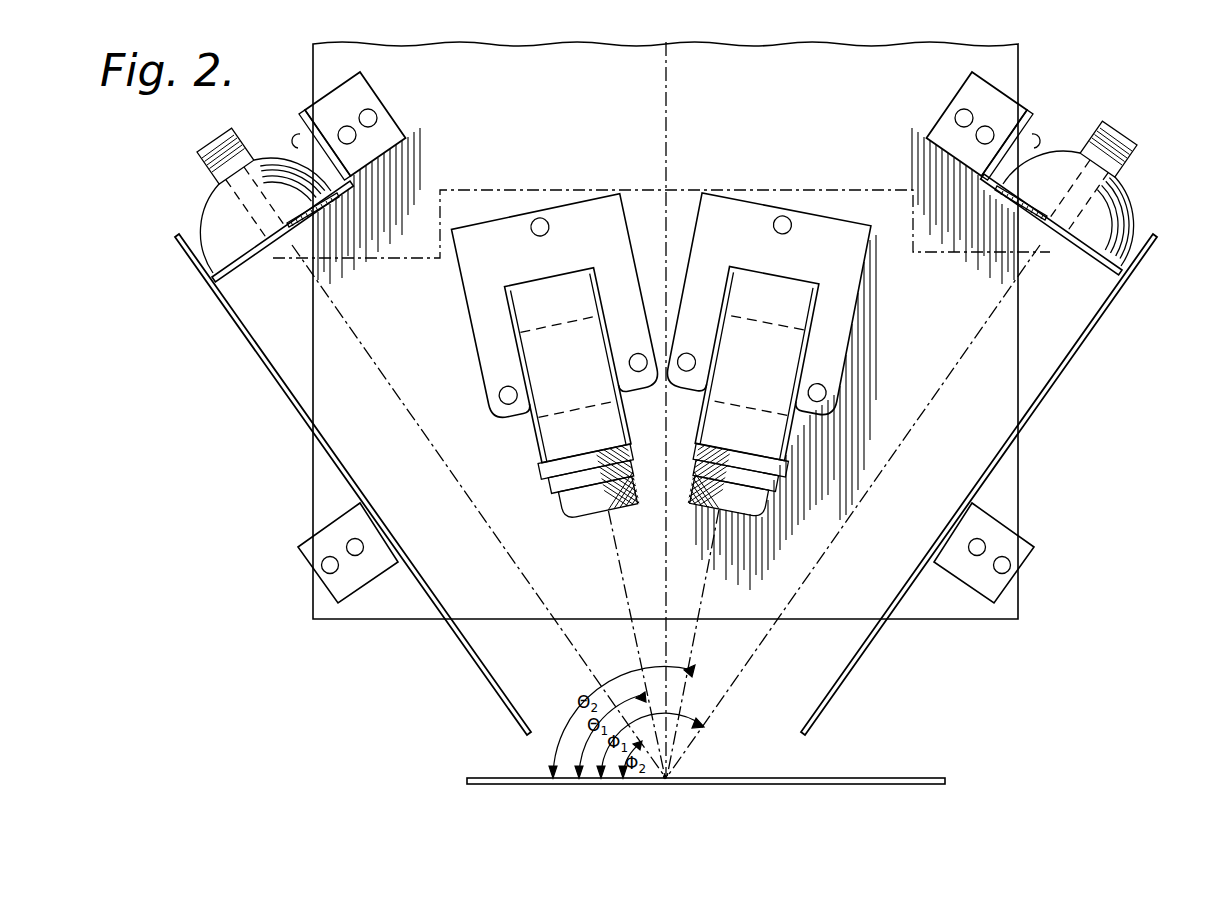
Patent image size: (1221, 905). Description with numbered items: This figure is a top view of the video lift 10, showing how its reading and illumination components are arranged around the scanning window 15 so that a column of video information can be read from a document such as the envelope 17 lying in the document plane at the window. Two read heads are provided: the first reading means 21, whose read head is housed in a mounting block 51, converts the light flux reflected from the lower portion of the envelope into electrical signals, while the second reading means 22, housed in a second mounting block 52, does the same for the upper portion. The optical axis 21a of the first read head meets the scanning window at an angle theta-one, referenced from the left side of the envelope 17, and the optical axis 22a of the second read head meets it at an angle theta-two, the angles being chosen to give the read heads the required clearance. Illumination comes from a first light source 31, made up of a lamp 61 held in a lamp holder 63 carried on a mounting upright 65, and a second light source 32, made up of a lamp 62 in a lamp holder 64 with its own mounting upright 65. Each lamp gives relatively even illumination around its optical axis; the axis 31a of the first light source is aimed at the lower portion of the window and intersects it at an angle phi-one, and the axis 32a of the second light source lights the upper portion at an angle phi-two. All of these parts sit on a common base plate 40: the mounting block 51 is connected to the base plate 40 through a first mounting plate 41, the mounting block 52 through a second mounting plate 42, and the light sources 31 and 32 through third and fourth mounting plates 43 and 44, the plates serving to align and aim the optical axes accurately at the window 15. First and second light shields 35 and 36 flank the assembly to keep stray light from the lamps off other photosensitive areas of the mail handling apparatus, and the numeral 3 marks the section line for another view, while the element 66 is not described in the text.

The video lift 10 is at (168, 579).
The scanning window 15 is at (668, 777).
The envelope 17 is at (827, 778).
The first reading means 21 is at (579, 459).
The optical axis of the first read head 21a is at (610, 546).
The second reading means 22 is at (745, 459).
The optical axis of the second read head 22a is at (716, 570).
The first light source 31 is at (1026, 160).
The optical axis of the first light source 31a is at (930, 404).
The second light source 32 is at (307, 172).
The optical axis of the second light source 32a is at (424, 474).
The first light shield 35 is at (1045, 405).
The second light shield 36 is at (296, 427).
The base plate 40 is at (351, 619).
The first mounting plate 41 is at (484, 330).
The second mounting plate 42 is at (833, 342).
The third mounting plate 43 is at (930, 126).
The fourth mounting plate 44 is at (408, 134).
The mounting block of the first reading means 51 is at (537, 292).
The second mounting block 52 is at (787, 292).
The lamp 61 is at (1122, 206).
The lamp 62 is at (215, 212).
The lamp holder 63 is at (1028, 208).
The lamp holder 64 is at (318, 212).
The mounting upright 65 is at (1020, 125).
The first lamp mounting plate 66 is at (347, 178).
The section line 3- 3 is at (273, 258).